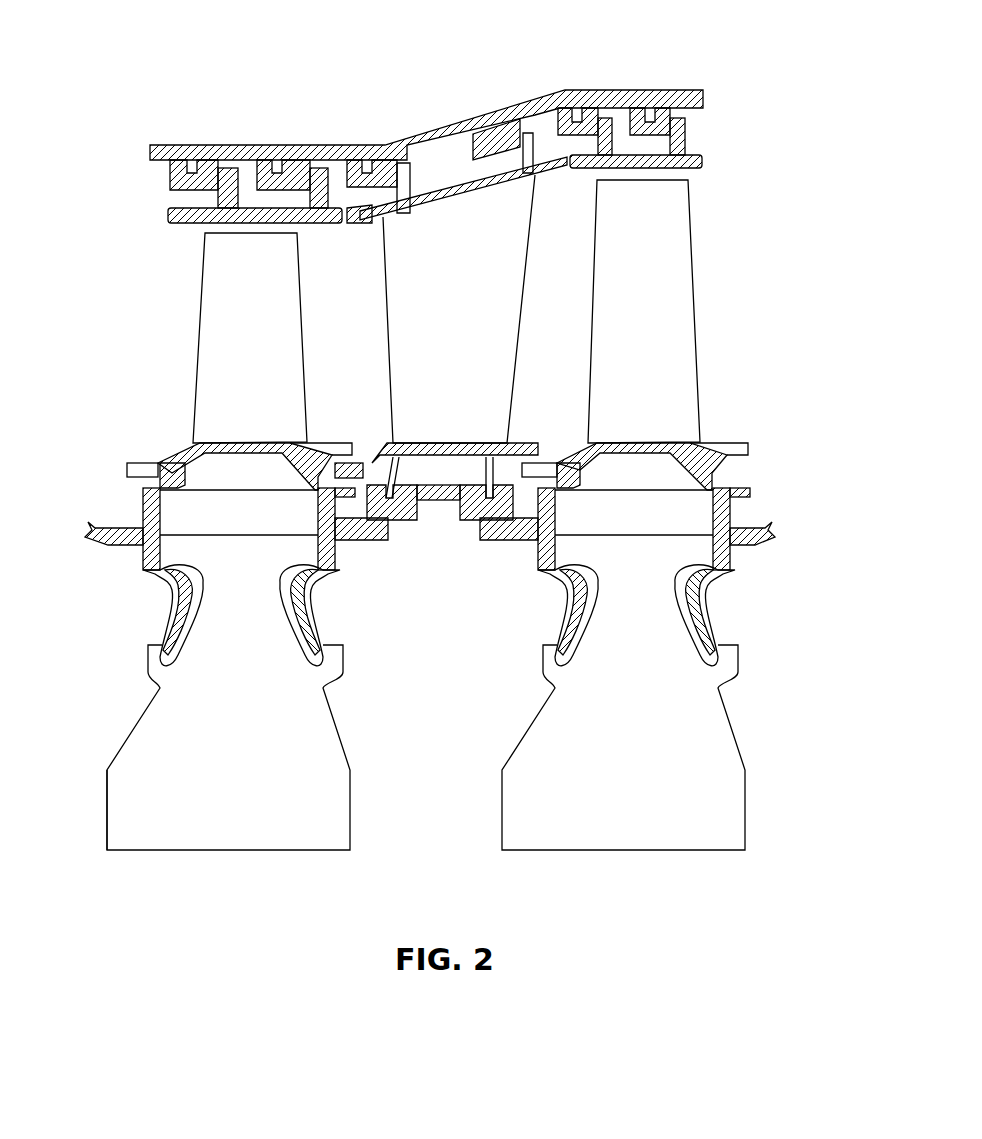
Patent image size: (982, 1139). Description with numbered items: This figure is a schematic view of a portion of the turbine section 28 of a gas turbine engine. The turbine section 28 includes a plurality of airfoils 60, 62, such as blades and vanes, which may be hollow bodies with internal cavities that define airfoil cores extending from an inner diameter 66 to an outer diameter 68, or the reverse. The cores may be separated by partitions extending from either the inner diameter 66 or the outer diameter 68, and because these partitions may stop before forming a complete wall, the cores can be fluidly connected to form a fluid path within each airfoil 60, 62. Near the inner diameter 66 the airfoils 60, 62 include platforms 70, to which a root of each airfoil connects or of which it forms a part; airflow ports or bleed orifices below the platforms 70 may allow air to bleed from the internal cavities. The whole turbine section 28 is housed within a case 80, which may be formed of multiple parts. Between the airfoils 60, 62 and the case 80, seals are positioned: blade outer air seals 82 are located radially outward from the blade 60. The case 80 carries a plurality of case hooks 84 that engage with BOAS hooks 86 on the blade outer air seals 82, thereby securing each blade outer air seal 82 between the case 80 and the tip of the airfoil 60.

The turbine section 28 is at (102, 38).
The airfoil 60 is at (283, 298).
The airfoil 62 is at (500, 265).
The inner diameter 66 is at (377, 428).
The outer diameter 68 is at (182, 252).
The platform 70 is at (523, 440).
The case 80 is at (440, 128).
The blade outer air seal 82 is at (242, 210).
The case hook 84 is at (295, 168).
The BOAS hook 86 is at (236, 206).